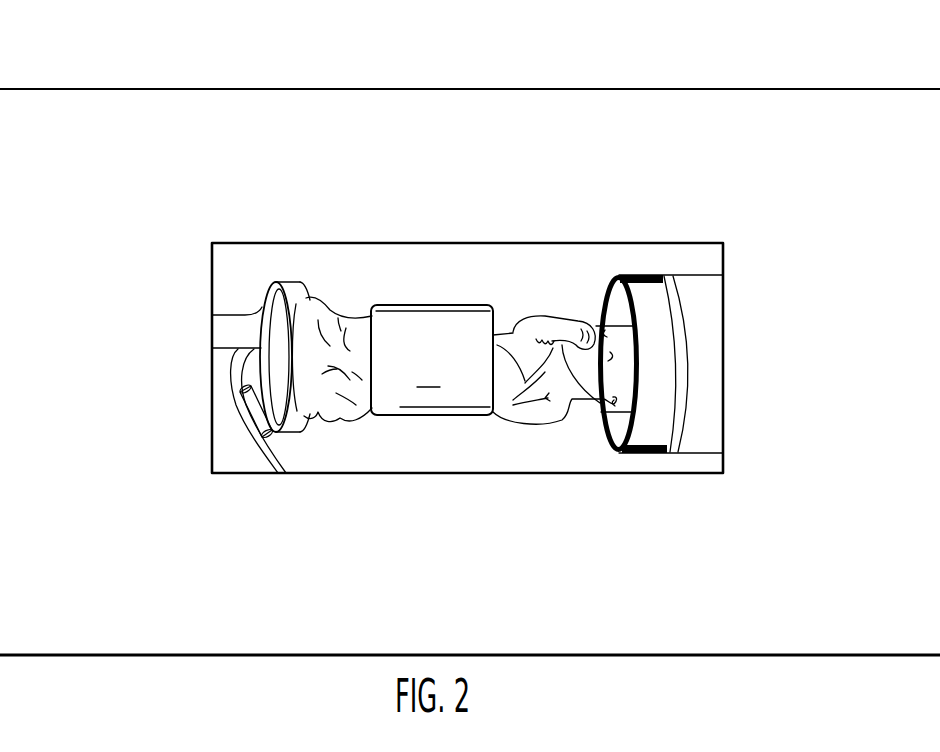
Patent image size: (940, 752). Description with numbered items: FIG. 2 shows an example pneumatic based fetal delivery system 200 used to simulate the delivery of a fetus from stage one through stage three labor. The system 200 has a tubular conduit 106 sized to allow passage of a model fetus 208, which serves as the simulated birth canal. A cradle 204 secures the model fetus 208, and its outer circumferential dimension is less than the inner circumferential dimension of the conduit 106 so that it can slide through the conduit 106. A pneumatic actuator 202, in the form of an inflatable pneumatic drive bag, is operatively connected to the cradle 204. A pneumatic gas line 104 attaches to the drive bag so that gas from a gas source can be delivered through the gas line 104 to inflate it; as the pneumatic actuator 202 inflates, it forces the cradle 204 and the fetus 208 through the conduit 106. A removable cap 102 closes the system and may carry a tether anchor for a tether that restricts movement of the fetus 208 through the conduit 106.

The pneumatic based fetal delivery system 200 is at (467, 125).
The removable cap 102 is at (273, 303).
The pneumatic gas line 104 is at (228, 403).
The conduit 106 is at (705, 305).
The pneumatic actuator 202 is at (325, 353).
The cradle 204 is at (433, 417).
The model fetus 208 is at (575, 416).